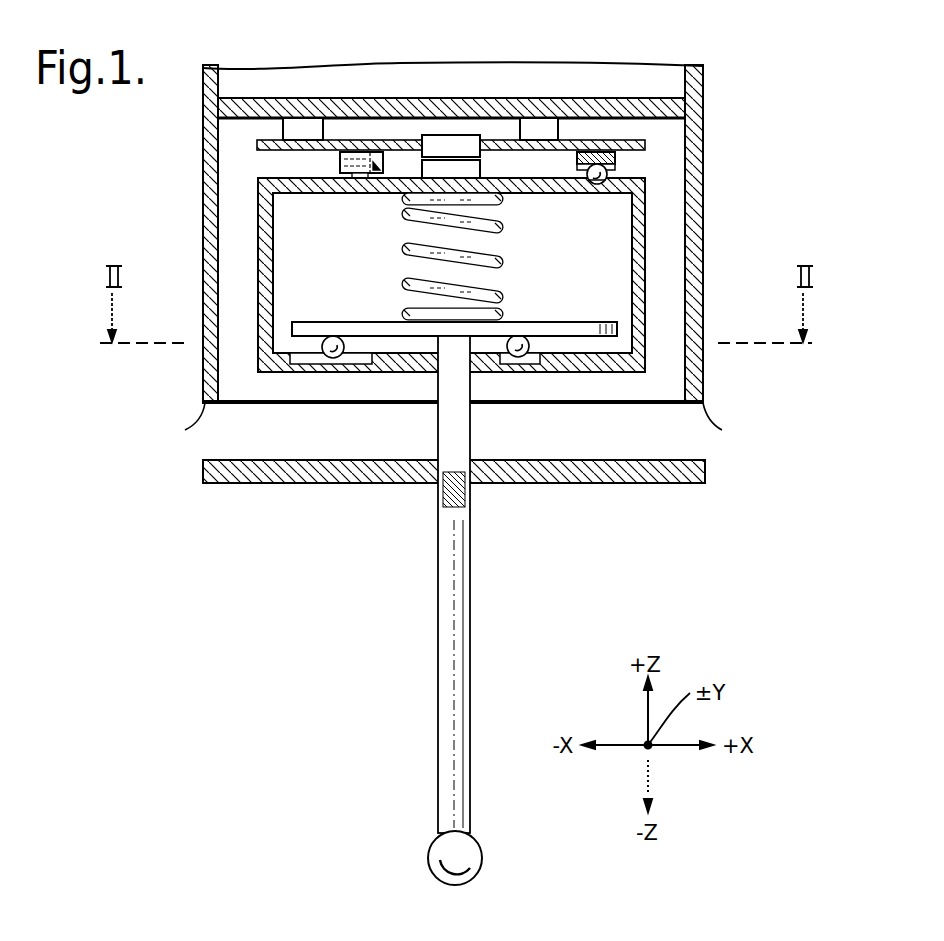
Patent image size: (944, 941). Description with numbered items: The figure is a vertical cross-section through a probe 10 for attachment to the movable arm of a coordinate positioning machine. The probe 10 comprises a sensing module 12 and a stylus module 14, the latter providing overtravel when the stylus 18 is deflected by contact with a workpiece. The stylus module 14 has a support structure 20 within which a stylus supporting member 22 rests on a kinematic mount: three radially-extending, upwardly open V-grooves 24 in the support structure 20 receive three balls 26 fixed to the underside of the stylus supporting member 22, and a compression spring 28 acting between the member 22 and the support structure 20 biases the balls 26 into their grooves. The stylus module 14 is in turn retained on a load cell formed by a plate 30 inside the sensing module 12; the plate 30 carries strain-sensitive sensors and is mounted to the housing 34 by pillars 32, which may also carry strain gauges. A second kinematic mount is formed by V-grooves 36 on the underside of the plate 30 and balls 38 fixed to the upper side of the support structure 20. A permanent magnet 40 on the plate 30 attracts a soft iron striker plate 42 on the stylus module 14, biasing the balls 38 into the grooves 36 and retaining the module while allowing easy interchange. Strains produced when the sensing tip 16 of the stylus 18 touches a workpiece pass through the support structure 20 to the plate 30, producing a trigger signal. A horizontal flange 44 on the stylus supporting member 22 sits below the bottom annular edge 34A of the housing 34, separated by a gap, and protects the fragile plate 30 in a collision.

The probe 10 is at (484, 243).
The sensing module 12 is at (371, 101).
The stylus module 14 is at (511, 275).
The sensing tip 16 is at (445, 858).
The stylus 18 is at (447, 660).
The support structure 20 is at (645, 205).
The stylus supporting member 22 is at (582, 338).
The V-grooves 24 is at (360, 366).
The balls 26 is at (329, 360).
The compression spring 28 is at (502, 263).
The plate 30 is at (406, 141).
The pillars 32 is at (297, 125).
The housing 34 is at (692, 150).
The bottom annular edge 34A is at (453, 430).
The V-grooves 36 is at (355, 152).
The balls 38 is at (355, 180).
The permanent magnet 40 is at (457, 142).
The soft iron striker plate 42 is at (439, 168).
The flange 44 is at (540, 486).